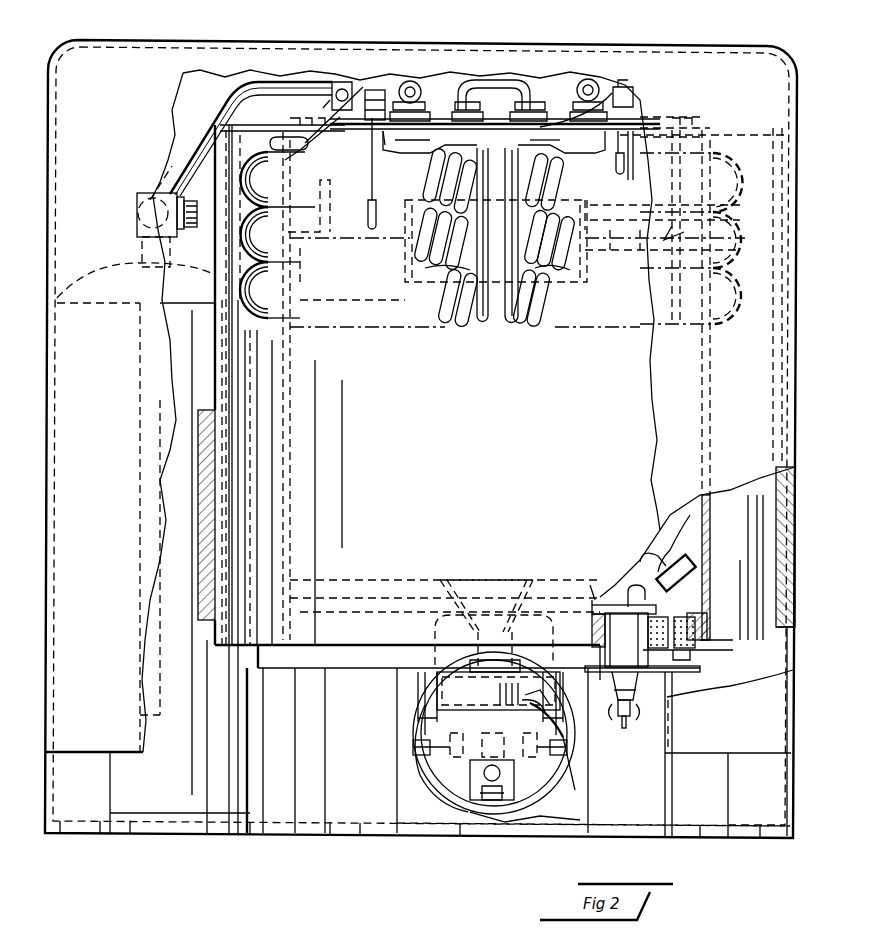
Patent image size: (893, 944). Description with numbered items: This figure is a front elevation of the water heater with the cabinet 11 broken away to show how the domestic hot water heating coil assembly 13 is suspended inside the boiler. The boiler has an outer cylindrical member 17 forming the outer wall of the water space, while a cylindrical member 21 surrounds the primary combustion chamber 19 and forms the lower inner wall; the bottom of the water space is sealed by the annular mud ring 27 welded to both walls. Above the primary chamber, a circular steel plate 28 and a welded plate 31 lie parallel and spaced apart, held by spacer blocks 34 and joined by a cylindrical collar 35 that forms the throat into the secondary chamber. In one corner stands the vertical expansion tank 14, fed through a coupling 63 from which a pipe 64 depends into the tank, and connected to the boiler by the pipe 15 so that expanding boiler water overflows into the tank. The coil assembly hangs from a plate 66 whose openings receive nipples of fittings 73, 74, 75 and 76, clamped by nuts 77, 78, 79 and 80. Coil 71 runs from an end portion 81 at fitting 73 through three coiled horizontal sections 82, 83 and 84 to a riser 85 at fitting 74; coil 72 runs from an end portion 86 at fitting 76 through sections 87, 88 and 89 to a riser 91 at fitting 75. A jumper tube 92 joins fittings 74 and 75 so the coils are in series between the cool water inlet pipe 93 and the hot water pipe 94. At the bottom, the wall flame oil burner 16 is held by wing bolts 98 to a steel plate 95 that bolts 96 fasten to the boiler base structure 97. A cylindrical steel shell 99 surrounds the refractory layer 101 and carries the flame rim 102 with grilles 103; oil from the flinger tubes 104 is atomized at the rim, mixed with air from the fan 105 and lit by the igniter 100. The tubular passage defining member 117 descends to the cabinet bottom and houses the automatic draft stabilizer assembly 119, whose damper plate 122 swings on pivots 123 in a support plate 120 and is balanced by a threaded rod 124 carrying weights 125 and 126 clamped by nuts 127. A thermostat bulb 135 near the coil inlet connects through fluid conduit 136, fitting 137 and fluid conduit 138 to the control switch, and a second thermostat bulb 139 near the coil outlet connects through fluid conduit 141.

The cabinet 11 is at (801, 168).
The domestic hot water heating coil assembly 13 is at (522, 332).
The expansion tank 14 is at (214, 751).
The pipe 15 is at (232, 93).
The wall flame oil burner 16 is at (490, 709).
The outer cylindrical member 17 is at (770, 562).
The primary combustion chamber 19 is at (528, 487).
The cylindrical member 21 is at (708, 394).
The mud ring 27 is at (736, 640).
The circular steel plate 28 is at (352, 282).
The welded plate 31 is at (680, 232).
The spacer blocks 34 is at (302, 250).
The cylindrical collar 35 is at (600, 224).
The coupling 63 is at (140, 207).
The pipe 64 is at (172, 626).
The plate 66 is at (636, 116).
The coil 71 is at (386, 332).
The coil 72 is at (628, 322).
The fitting 73 is at (398, 150).
The fitting 74 is at (428, 150).
The fitting 75 is at (532, 136).
The fitting 76 is at (565, 165).
The nut 77 is at (430, 110).
The nut 78 is at (468, 90).
The nut 79 is at (552, 90).
The nut 80 is at (630, 98).
The end portion 81 is at (303, 155).
The coiled horizontal section 82 is at (252, 158).
The coiled horizontal section 83 is at (248, 236).
The coiled horizontal section 84 is at (246, 318).
The riser 85 is at (445, 284).
The end portion 86 is at (718, 140).
The coiled horizontal section 87 is at (748, 175).
The coiled horizontal section 88 is at (750, 232).
The coiled horizontal section 89 is at (750, 285).
The riser 91 is at (545, 282).
The jumper tube 92 is at (510, 82).
The cool water inlet pipe 93 is at (418, 74).
The pipe 94 is at (597, 77).
The steel plate 95 is at (642, 674).
The bolts 96 is at (700, 700).
The boiler base structure 97 is at (765, 690).
The wing bolts 98 is at (424, 696).
The cylindrical steel shell 99 is at (700, 605).
The igniter 100 is at (616, 714).
The layer of refractory material 101 is at (596, 605).
The flame rim 102 is at (646, 585).
The grilles 103 is at (672, 560).
The flinger tubes 104 is at (516, 580).
The fan 105 is at (540, 580).
The tubular passage defining member 117 is at (624, 830).
The automatic draft stabilizer assembly 119 is at (575, 760).
The support plate 120 is at (550, 785).
The damper plate 122 is at (455, 770).
The pivots 123 is at (413, 746).
The threaded rod 124 is at (504, 826).
The weight 125 is at (470, 795).
The weight 126 is at (512, 732).
The nuts 127 is at (580, 778).
The thermostat bulb 135 is at (376, 232).
The fluid conduit 136 is at (366, 150).
The fitting 137 is at (386, 82).
The fluid conduit 138 is at (343, 80).
The thermostat bulb 139 is at (590, 180).
The fluid conduit 141 is at (608, 142).